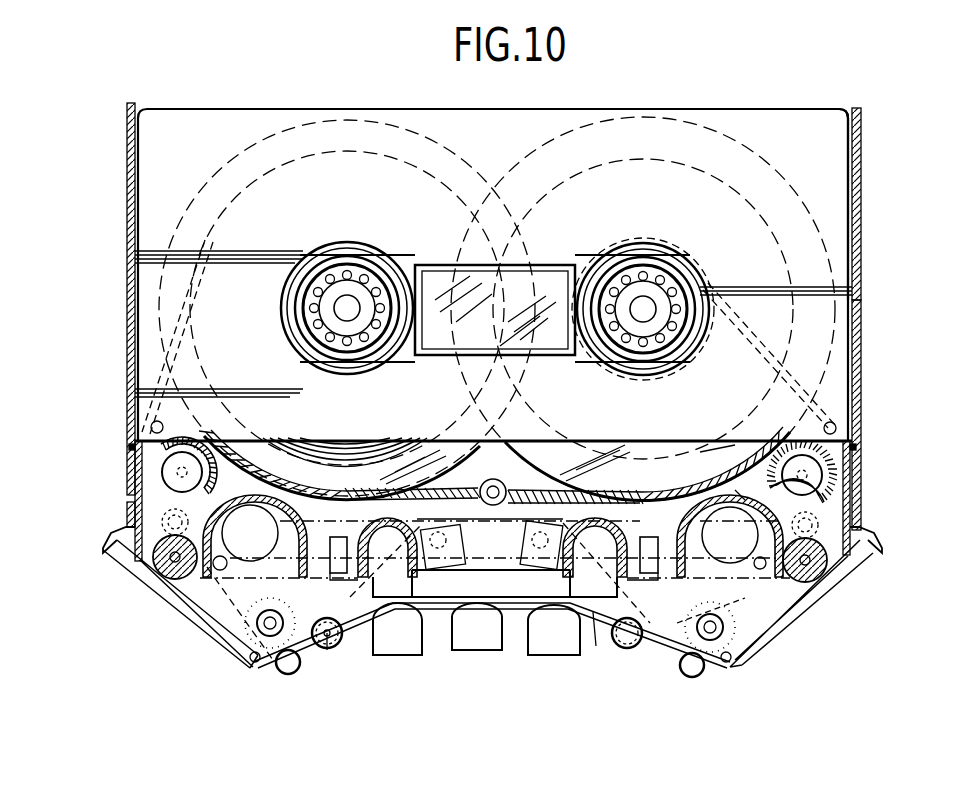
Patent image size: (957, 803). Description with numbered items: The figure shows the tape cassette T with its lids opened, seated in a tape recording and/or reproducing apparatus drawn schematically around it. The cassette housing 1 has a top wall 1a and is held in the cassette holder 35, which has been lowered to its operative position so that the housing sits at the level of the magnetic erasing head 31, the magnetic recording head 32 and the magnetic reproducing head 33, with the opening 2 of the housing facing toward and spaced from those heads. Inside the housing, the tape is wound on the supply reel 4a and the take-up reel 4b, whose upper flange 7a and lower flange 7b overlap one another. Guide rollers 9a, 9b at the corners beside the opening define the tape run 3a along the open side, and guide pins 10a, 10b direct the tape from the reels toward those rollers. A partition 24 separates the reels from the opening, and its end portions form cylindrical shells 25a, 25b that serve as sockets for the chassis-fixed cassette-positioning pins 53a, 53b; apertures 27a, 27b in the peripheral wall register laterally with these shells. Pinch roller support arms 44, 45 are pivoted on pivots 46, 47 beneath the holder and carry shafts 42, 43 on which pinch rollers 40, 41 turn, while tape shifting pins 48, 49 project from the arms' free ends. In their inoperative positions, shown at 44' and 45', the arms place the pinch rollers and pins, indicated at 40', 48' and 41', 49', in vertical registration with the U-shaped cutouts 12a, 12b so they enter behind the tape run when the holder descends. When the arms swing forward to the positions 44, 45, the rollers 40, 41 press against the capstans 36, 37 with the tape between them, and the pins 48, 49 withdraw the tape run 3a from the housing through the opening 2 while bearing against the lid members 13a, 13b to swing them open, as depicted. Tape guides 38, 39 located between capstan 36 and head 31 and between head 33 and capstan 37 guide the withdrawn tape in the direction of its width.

The tape cassette T is at (766, 97).
The cassette housing 1 is at (804, 122).
The top wall 1a is at (835, 203).
The cassette holder 35 is at (872, 292).
The supply reel 4a is at (326, 138).
The take-up reel 4b is at (616, 138).
The upper flange 7a is at (405, 124).
The lower flange 7b is at (678, 122).
The guide pin 10a is at (150, 426).
The guide pin 10b is at (836, 427).
The cylindrical shell 25a is at (130, 447).
The cylindrical shell 25b is at (856, 447).
The aperture 27a is at (165, 450).
The aperture 27b is at (815, 450).
The cassette-positioning pin 53a is at (174, 477).
The cassette-positioning pin 53b is at (815, 478).
The U-shaped cutout 12a is at (260, 500).
The U-shaped cutout 12b is at (718, 505).
The pinch roller in inoperative position 40' is at (310, 526).
The pinch roller in inoperative position 41' is at (759, 455).
The support arm in inoperative position 44' is at (339, 470).
The support arm in inoperative position 45' is at (647, 474).
The partition 24 is at (468, 486).
The pivot 46 is at (448, 538).
The pivot 47 is at (535, 547).
The guide roller 9a is at (170, 573).
The guide roller 9b is at (812, 557).
The lid member 13a is at (122, 580).
The lid member 13b is at (853, 585).
The shaft 42 is at (265, 626).
The shaft 43 is at (718, 628).
The tape shifting pin in inoperative position 48' is at (222, 588).
The tape shifting pin 48 is at (251, 675).
The tape shifting pin in inoperative position 49' is at (764, 591).
The tape shifting pin 49 is at (736, 677).
The capstan 36 is at (288, 665).
The capstan 37 is at (692, 668).
The tape guide 38 is at (331, 646).
The tape guide 39 is at (627, 633).
The pinch roller 40 is at (491, 645).
The pinch roller 41 is at (798, 613).
The pinch roller support arm 44 is at (349, 640).
The pinch roller support arm 45 is at (694, 646).
The magnetic erasing head 31 is at (397, 640).
The magnetic recording head 32 is at (474, 638).
The magnetic reproducing head 33 is at (551, 638).
The opening 2 is at (514, 588).
The tape run 3a is at (595, 645).